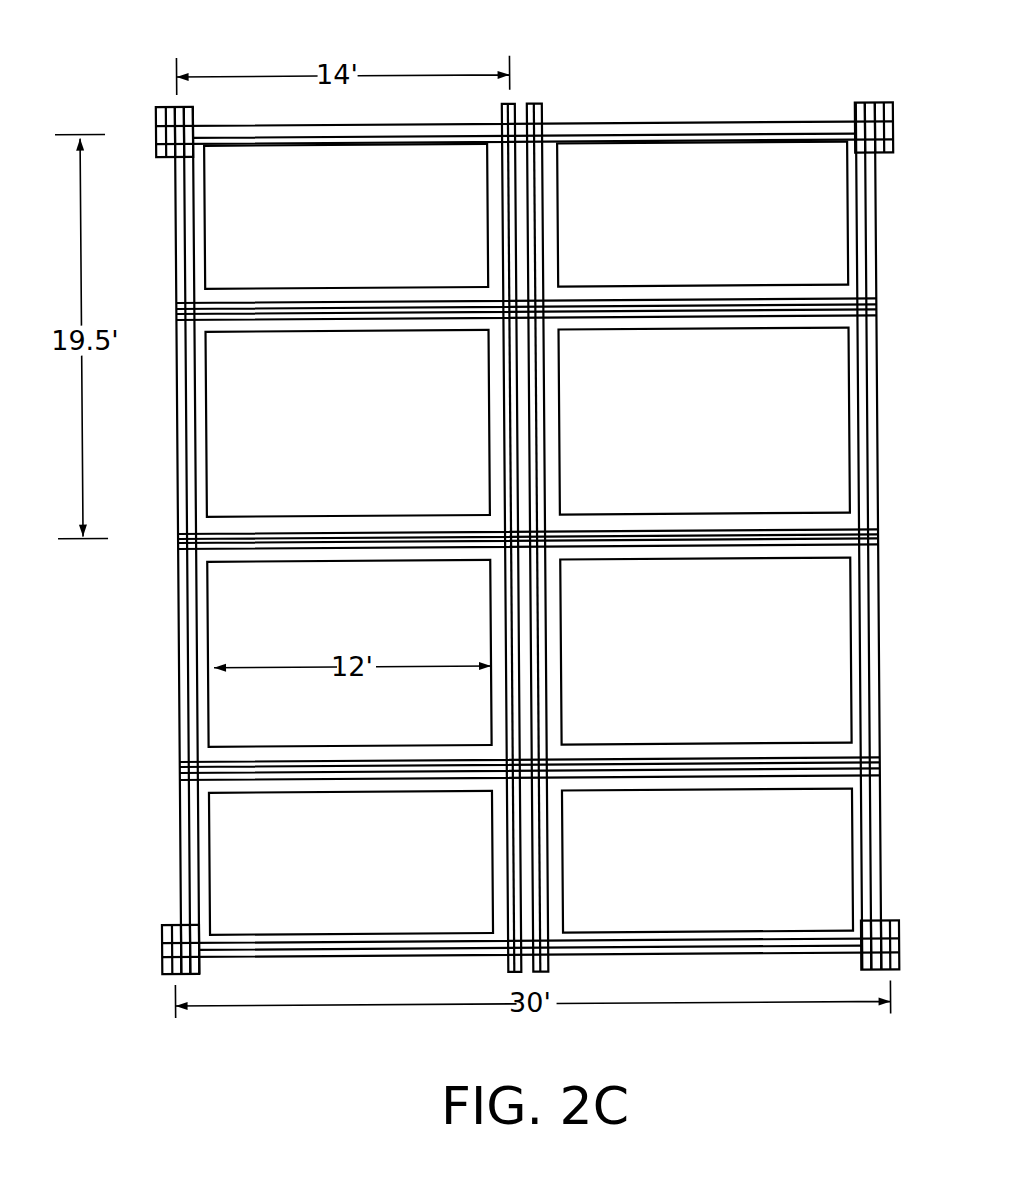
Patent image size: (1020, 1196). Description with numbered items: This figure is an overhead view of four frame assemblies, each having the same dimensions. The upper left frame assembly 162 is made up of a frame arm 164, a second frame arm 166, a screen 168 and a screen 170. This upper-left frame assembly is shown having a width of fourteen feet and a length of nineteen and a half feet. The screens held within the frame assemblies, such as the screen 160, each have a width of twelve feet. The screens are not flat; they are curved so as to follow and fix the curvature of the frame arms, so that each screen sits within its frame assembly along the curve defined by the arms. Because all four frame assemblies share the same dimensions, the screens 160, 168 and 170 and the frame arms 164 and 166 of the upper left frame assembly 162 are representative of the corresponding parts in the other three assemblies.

The screen 160 is at (245, 630).
The upper left frame assembly 162 is at (136, 96).
The frame arm 164 is at (164, 98).
The frame arm 166 is at (524, 92).
The screen 168 is at (257, 225).
The screen 170 is at (257, 434).